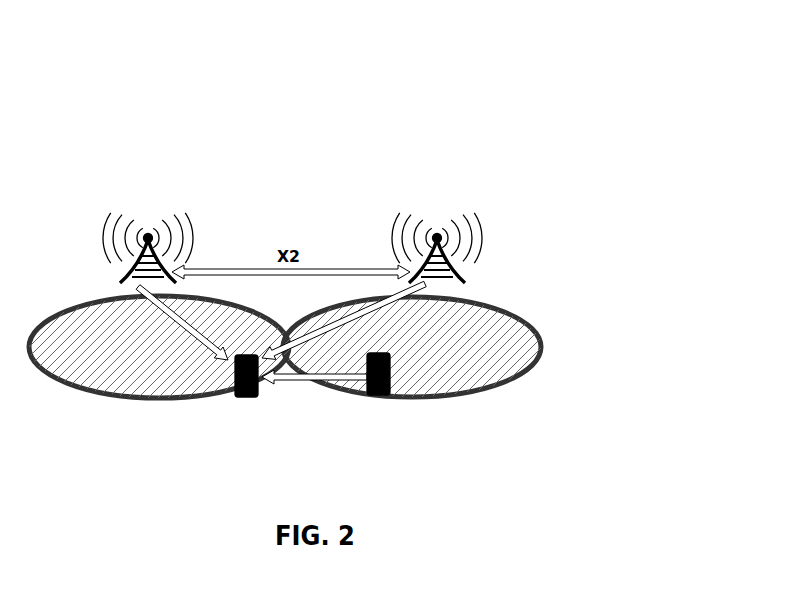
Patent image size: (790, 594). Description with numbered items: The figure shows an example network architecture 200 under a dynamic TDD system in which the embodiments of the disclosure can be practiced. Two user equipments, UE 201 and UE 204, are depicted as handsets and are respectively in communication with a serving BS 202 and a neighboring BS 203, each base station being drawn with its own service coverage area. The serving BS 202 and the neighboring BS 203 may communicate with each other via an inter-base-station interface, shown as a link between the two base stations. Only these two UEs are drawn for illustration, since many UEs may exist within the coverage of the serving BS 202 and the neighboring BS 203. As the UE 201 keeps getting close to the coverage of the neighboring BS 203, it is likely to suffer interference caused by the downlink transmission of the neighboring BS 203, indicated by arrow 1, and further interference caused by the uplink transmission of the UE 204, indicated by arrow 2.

The network architecture 200 is at (597, 72).
The UE 201 is at (236, 403).
The serving BS 202 is at (148, 220).
The neighboring BS 203 is at (448, 221).
The UE 204 is at (378, 400).
The arrow 1 is at (344, 320).
The arrow 2 is at (314, 389).